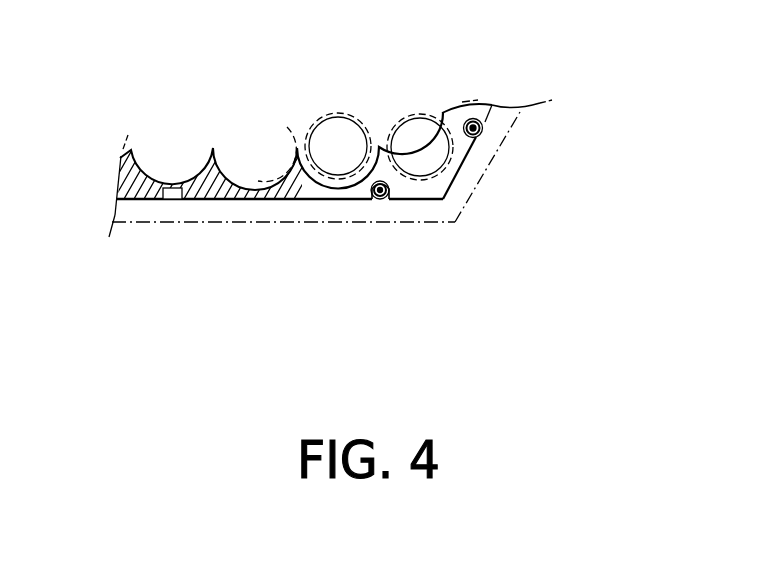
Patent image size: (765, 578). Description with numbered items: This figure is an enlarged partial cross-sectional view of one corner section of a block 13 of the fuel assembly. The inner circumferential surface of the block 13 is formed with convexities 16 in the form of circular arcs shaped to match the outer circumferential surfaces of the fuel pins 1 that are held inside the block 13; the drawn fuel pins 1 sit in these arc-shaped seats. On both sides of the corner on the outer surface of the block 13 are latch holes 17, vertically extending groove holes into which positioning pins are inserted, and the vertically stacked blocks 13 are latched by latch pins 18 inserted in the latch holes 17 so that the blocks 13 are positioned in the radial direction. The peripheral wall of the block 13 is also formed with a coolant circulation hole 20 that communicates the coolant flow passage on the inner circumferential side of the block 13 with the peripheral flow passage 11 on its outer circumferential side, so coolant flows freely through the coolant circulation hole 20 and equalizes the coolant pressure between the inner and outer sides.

The fuel pin 1 is at (395, 128).
The peripheral flow passage 11 is at (226, 212).
The block 13 is at (280, 200).
The convexity 16 is at (440, 112).
The latch hole 17 is at (482, 128).
The latch pin 18 is at (478, 136).
The coolant circulation hole 20 is at (178, 200).